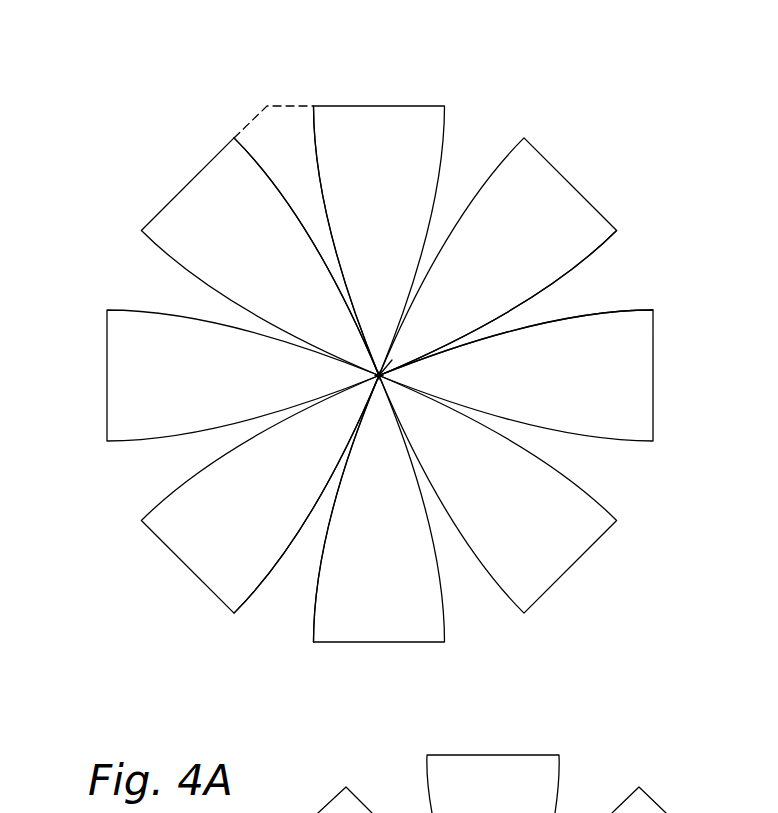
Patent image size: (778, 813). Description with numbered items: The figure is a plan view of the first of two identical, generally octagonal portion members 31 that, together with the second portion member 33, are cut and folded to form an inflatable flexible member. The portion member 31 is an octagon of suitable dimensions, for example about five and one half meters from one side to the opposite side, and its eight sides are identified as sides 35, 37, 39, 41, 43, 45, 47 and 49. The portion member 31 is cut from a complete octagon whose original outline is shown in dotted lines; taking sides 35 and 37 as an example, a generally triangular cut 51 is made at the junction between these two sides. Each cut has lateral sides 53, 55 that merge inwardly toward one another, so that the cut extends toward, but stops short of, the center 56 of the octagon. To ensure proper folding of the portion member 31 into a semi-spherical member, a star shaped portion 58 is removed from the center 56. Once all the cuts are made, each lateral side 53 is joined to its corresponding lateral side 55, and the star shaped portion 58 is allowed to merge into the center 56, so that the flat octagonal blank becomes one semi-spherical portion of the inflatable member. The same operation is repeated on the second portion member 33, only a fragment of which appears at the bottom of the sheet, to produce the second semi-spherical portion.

The portion member 31 is at (552, 112).
The portion member 33 is at (718, 756).
The side 35 is at (185, 186).
The side 37 is at (379, 105).
The side 39 is at (581, 190).
The side 41 is at (653, 378).
The side 43 is at (567, 570).
The side 45 is at (388, 643).
The side 47 is at (178, 562).
The side 49 is at (106, 377).
The triangular cut 51 is at (276, 125).
The lateral side 53 is at (275, 195).
The lateral side 55 is at (322, 185).
The center 56 is at (392, 360).
The star shaped portion 58 is at (365, 376).